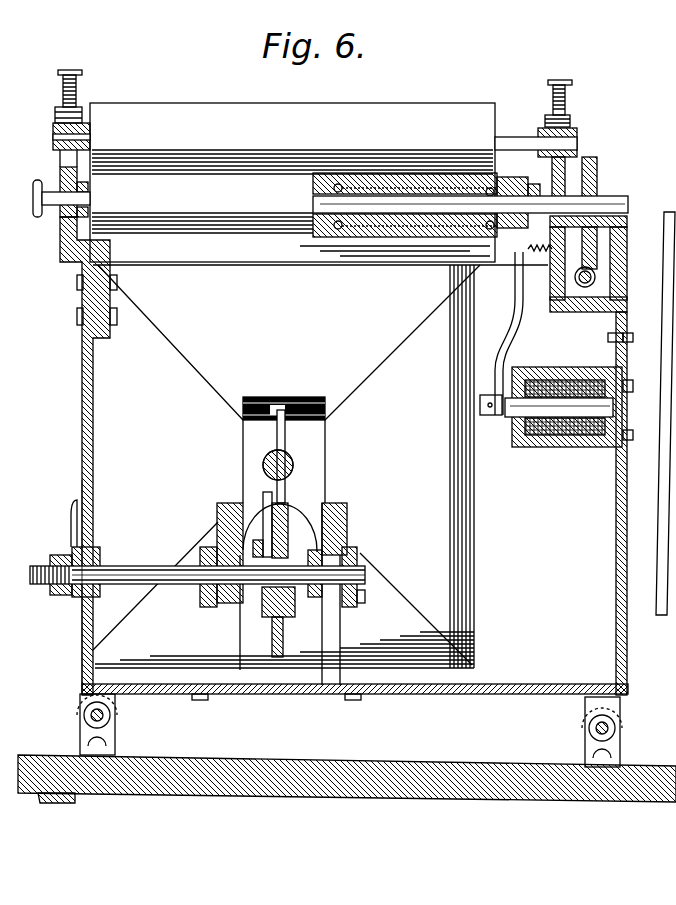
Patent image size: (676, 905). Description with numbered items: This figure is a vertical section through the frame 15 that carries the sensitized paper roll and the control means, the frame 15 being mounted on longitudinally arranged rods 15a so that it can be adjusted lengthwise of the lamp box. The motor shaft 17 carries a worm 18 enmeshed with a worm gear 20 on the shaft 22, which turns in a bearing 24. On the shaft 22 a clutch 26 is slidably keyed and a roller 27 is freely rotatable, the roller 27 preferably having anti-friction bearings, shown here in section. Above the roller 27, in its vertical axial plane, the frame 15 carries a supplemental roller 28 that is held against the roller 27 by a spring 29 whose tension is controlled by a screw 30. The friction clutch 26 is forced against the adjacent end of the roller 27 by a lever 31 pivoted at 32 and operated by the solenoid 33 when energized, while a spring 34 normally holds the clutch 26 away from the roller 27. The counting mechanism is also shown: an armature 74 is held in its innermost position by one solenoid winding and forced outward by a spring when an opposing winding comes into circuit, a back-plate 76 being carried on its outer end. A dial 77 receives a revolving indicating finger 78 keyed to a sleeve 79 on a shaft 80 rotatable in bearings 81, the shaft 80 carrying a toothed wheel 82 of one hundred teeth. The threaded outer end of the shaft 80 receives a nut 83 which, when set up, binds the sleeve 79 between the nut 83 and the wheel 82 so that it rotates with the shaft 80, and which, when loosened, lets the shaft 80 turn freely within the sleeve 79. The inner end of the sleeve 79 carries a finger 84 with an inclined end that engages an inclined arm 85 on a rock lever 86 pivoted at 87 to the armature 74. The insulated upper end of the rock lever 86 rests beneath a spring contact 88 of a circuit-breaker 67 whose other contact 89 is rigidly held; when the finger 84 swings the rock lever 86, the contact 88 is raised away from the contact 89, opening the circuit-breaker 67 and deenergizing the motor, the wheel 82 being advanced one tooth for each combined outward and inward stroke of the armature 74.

The frame 15 is at (82, 393).
The longitudinally arranged rods 15a is at (84, 715).
The motor shaft 17 is at (590, 280).
The worm 18 is at (594, 275).
The worm gear 20 is at (590, 250).
The shaft 22 is at (628, 212).
The bearing 24 is at (550, 311).
The clutch 26 is at (533, 186).
The roller 27 is at (386, 233).
The supplemental roller 28 is at (292, 182).
The spring 29 is at (56, 118).
The screw 30 is at (62, 90).
The lever 31 is at (516, 305).
The pivot 32 is at (523, 270).
The solenoid 33 is at (569, 368).
The spring 34 is at (528, 250).
The circuit-breaker 67 is at (290, 531).
The armature 74 is at (269, 455).
The back-plate 76 is at (474, 607).
The dial 77 is at (80, 628).
The indicating finger 78 is at (70, 525).
The sleeve 79 is at (124, 565).
The shaft 80 is at (130, 584).
The bearing 81 is at (218, 608).
The toothed wheel 82 is at (284, 626).
The nut 83 is at (52, 588).
The finger 84 is at (264, 522).
The arm 85 is at (267, 490).
The rock lever 86 is at (286, 487).
The pivot 87 is at (290, 465).
The spring contact 88 is at (333, 392).
The contact 89 is at (326, 418).